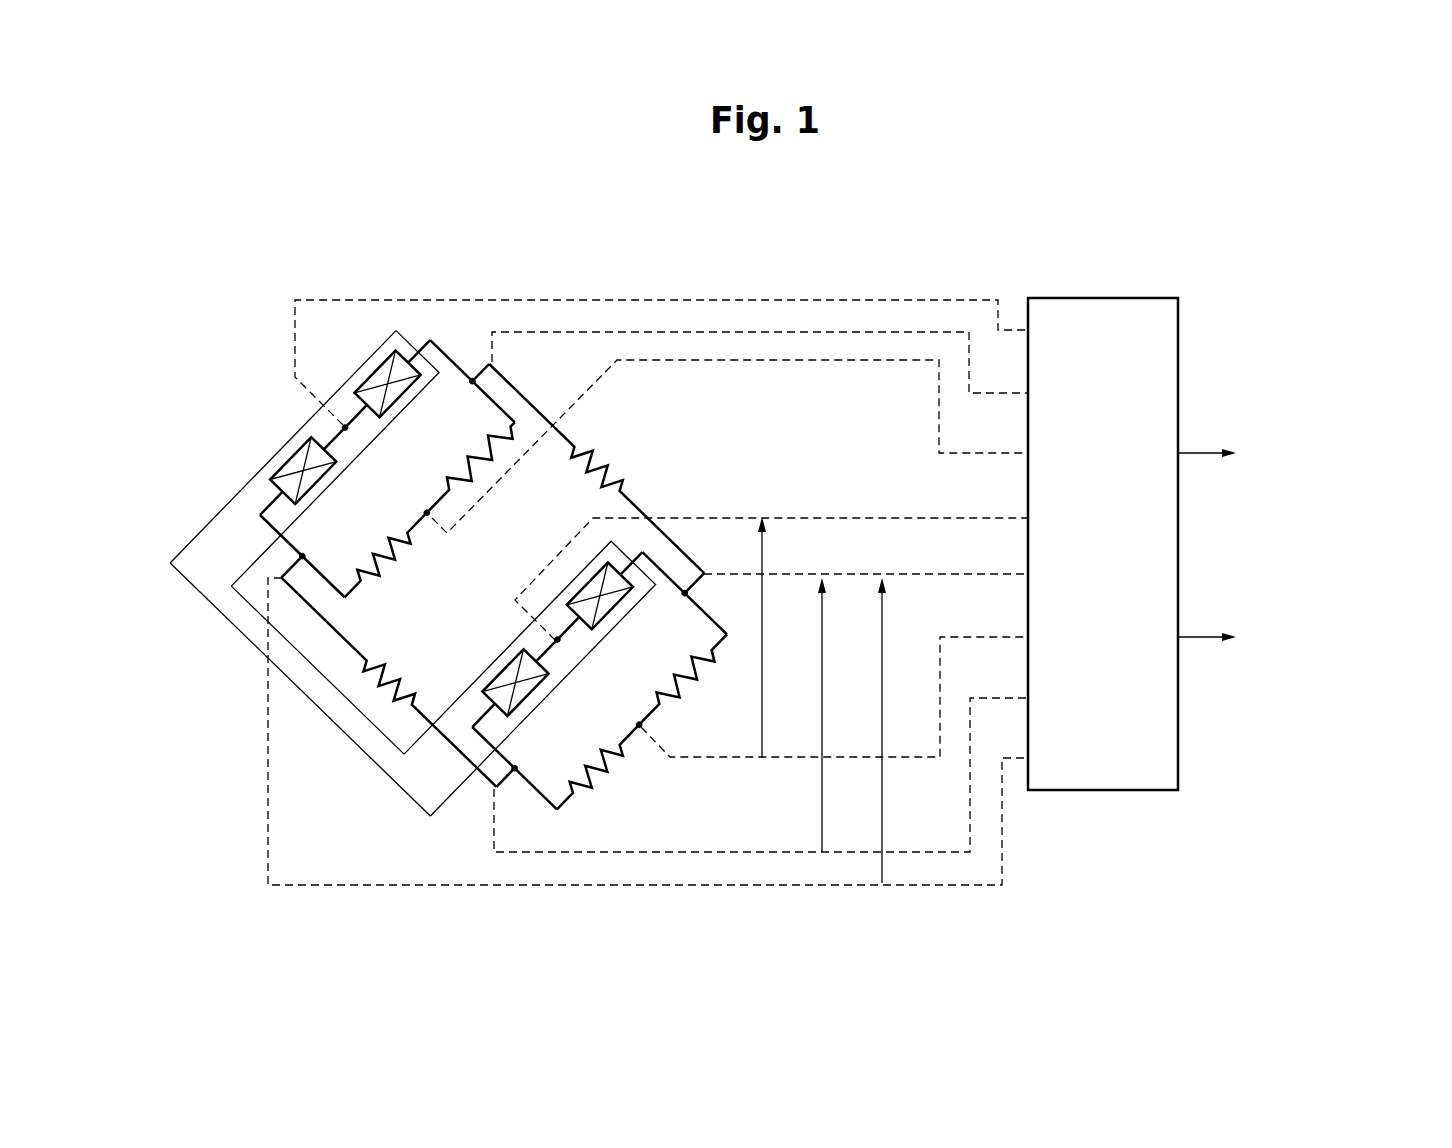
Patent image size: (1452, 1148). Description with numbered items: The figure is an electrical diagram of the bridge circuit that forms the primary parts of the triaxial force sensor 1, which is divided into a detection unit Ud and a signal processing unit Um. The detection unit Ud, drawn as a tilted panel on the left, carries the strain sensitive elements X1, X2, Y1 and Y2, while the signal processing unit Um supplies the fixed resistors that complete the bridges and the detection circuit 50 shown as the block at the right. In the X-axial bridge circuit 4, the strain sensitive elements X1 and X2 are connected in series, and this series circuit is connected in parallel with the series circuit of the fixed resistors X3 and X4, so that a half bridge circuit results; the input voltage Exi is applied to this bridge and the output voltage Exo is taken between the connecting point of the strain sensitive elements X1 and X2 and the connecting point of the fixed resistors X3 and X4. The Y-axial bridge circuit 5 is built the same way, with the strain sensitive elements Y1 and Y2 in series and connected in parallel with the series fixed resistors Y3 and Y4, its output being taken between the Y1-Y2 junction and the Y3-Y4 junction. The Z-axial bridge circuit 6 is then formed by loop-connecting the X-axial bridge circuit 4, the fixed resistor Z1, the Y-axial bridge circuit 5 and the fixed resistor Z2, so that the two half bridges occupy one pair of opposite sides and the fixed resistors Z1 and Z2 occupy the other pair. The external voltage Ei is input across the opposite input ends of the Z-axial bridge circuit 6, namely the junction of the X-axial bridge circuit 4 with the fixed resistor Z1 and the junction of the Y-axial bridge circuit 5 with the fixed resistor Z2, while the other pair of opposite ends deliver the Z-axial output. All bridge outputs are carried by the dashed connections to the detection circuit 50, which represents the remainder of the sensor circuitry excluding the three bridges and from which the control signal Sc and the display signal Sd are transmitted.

The triaxial force sensor 1 is at (237, 786).
The X-axial bridge circuit 4 is at (479, 821).
The Y-axial bridge circuit 5 is at (436, 544).
The Z-axial bridge circuit 6 is at (326, 756).
The detection circuit 50 is at (1179, 325).
The detection unit Ud is at (202, 527).
The signal processing unit Um is at (1043, 272).
The strain sensitive element Y1 is at (378, 368).
The strain sensitive element Y2 is at (286, 452).
The fixed resistor Y3 is at (388, 560).
The fixed resistor Y4 is at (464, 478).
The strain sensitive element X1 is at (620, 608).
The strain sensitive element X2 is at (537, 693).
The fixed resistor X3 is at (613, 763).
The fixed resistor X4 is at (693, 680).
The fixed resistor Z1 is at (612, 486).
The fixed resistor Z2 is at (398, 686).
The output voltage Exo is at (763, 660).
The input voltage Exi is at (821, 798).
The external voltage Ei is at (883, 673).
The control signal Sc is at (1305, 452).
The display signal Sd is at (1300, 636).